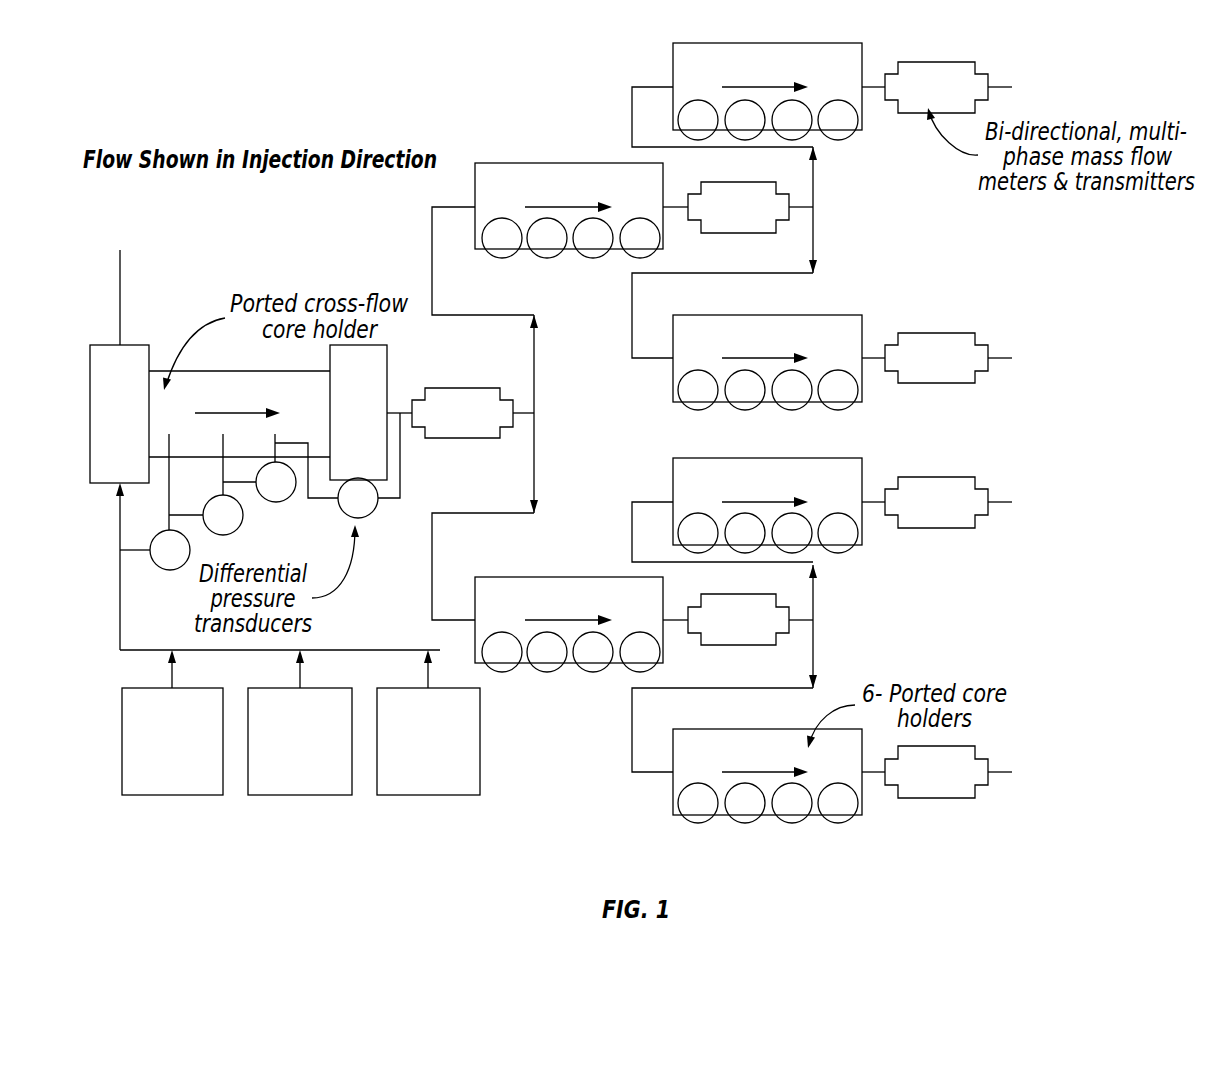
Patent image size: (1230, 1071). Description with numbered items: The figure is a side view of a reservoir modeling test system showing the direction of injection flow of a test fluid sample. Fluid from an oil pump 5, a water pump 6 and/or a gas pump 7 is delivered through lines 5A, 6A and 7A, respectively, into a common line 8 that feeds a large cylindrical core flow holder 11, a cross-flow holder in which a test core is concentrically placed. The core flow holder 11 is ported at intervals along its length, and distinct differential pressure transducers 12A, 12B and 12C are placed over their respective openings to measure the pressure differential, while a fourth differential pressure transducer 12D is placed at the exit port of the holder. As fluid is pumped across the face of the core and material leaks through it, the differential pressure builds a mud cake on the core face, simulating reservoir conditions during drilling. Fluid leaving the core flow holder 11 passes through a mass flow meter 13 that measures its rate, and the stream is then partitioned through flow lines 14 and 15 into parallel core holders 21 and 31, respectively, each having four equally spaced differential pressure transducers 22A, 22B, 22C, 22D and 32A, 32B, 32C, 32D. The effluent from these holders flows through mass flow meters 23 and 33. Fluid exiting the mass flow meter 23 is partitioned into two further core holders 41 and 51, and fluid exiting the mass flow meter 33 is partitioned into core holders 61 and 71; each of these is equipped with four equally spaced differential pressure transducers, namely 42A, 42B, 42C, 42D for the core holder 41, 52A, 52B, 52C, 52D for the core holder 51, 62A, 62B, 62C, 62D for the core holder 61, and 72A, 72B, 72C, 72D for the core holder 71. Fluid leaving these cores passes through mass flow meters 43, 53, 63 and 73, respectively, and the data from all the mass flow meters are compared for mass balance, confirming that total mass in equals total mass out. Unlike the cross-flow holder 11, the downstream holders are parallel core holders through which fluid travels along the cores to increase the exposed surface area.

The oil pump 5 is at (158, 795).
The water pump 6 is at (286, 795).
The gas pump 7 is at (416, 795).
The line 5A is at (170, 680).
The line 6A is at (298, 680).
The line 7A is at (427, 680).
The line 8 is at (120, 625).
The core flow holder 11 is at (254, 400).
The differential pressure transducer 12A is at (170, 570).
The differential pressure transducer 12B is at (237, 531).
The differential pressure transducer 12C is at (281, 503).
The differential pressure transducer 12D is at (366, 517).
The mass flow meter 13 is at (460, 388).
The flow line 14 is at (537, 377).
The flow line 15 is at (537, 460).
The core holder 21 is at (582, 198).
The differential pressure transducer 22A is at (496, 258).
The differential pressure transducer 22B is at (547, 258).
The differential pressure transducer 22C is at (590, 258).
The differential pressure transducer 22D is at (645, 258).
The mass flow meter 23 is at (728, 235).
The core holder 31 is at (582, 608).
The differential pressure transducer 32A is at (482, 640).
The differential pressure transducer 32B is at (545, 672).
The differential pressure transducer 32C is at (593, 672).
The differential pressure transducer 32D is at (655, 668).
The mass flow meter 33 is at (735, 645).
The core holder 41 is at (781, 80).
The differential pressure transducer 42A is at (690, 100).
The differential pressure transducer 42B is at (745, 142).
The differential pressure transducer 42C is at (795, 142).
The differential pressure transducer 42D is at (840, 141).
The mass flow meter 43 is at (965, 63).
The core holder 51 is at (781, 350).
The differential pressure transducer 52A is at (685, 408).
The differential pressure transducer 52B is at (742, 410).
The differential pressure transducer 52C is at (785, 410).
The differential pressure transducer 52D is at (850, 408).
The mass flow meter 53 is at (965, 334).
The core holder 61 is at (781, 493).
The differential pressure transducer 62A is at (682, 526).
The differential pressure transducer 62B is at (730, 550).
The differential pressure transducer 62C is at (786, 553).
The differential pressure transducer 62D is at (851, 550).
The mass flow meter 63 is at (965, 478).
The core holder 71 is at (781, 765).
The differential pressure transducer 72A is at (685, 820).
The differential pressure transducer 72B is at (745, 823).
The differential pressure transducer 72C is at (793, 823).
The differential pressure transducer 72D is at (851, 820).
The mass flow meter 73 is at (950, 798).